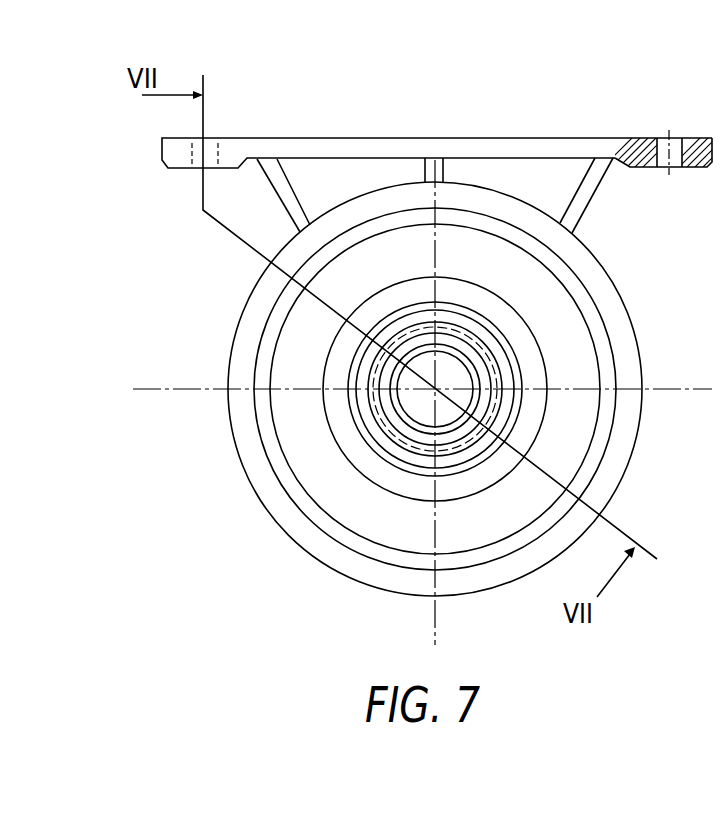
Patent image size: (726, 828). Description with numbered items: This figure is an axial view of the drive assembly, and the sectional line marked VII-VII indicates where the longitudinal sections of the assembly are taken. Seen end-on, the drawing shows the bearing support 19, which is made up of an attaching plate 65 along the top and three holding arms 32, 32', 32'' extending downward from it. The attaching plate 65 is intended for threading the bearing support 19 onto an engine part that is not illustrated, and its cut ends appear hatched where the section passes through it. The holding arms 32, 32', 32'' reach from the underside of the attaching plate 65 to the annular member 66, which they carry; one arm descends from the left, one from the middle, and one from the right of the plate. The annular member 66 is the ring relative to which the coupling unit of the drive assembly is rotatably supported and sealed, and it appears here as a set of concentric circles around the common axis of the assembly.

The bearing support 19 is at (401, 131).
The holding arm 32 is at (283, 160).
The holding arm 32' is at (446, 128).
The holding arm 32'' is at (586, 161).
The attaching plate 65 is at (500, 145).
The annular member 66 is at (597, 277).